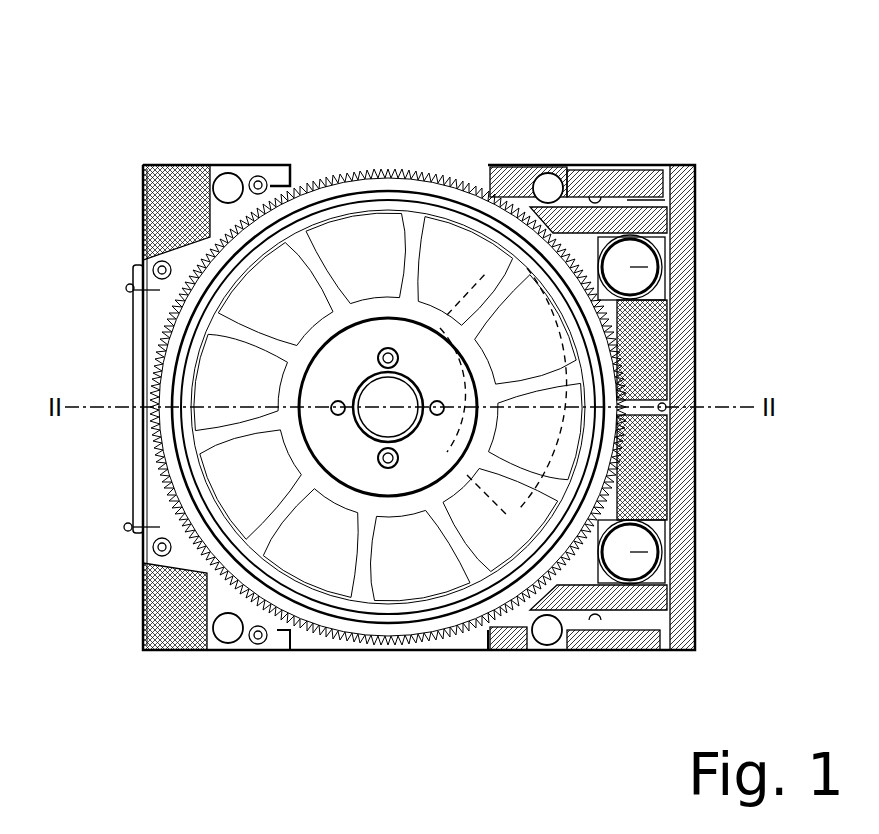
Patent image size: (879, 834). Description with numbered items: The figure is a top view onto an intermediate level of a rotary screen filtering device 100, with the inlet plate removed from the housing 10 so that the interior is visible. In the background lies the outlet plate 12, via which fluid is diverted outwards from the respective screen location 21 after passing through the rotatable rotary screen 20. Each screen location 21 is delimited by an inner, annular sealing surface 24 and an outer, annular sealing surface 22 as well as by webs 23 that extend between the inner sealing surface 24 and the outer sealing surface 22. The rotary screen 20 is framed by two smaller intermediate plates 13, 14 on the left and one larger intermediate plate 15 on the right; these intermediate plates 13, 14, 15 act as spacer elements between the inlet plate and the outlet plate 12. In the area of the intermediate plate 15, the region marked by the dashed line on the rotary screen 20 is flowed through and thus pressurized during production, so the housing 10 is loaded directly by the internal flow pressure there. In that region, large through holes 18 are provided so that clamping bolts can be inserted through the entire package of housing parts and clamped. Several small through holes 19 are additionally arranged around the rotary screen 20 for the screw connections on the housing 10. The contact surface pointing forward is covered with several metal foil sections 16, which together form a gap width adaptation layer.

The rotary screen filtering device 100 is at (118, 90).
The housing 10 is at (277, 165).
The outlet plate 12 is at (300, 650).
The intermediate plate 13 is at (130, 288).
The intermediate plate 14 is at (140, 508).
The intermediate plate 15 is at (695, 187).
The metal foil section 16 is at (143, 203).
The through hole 18 is at (695, 266).
The through hole 19 is at (548, 190).
The rotary screen 20 is at (382, 172).
The screen location 21 is at (403, 240).
The outer sealing surface 22 is at (470, 215).
The web 23 is at (378, 485).
The inner sealing surface 24 is at (393, 540).